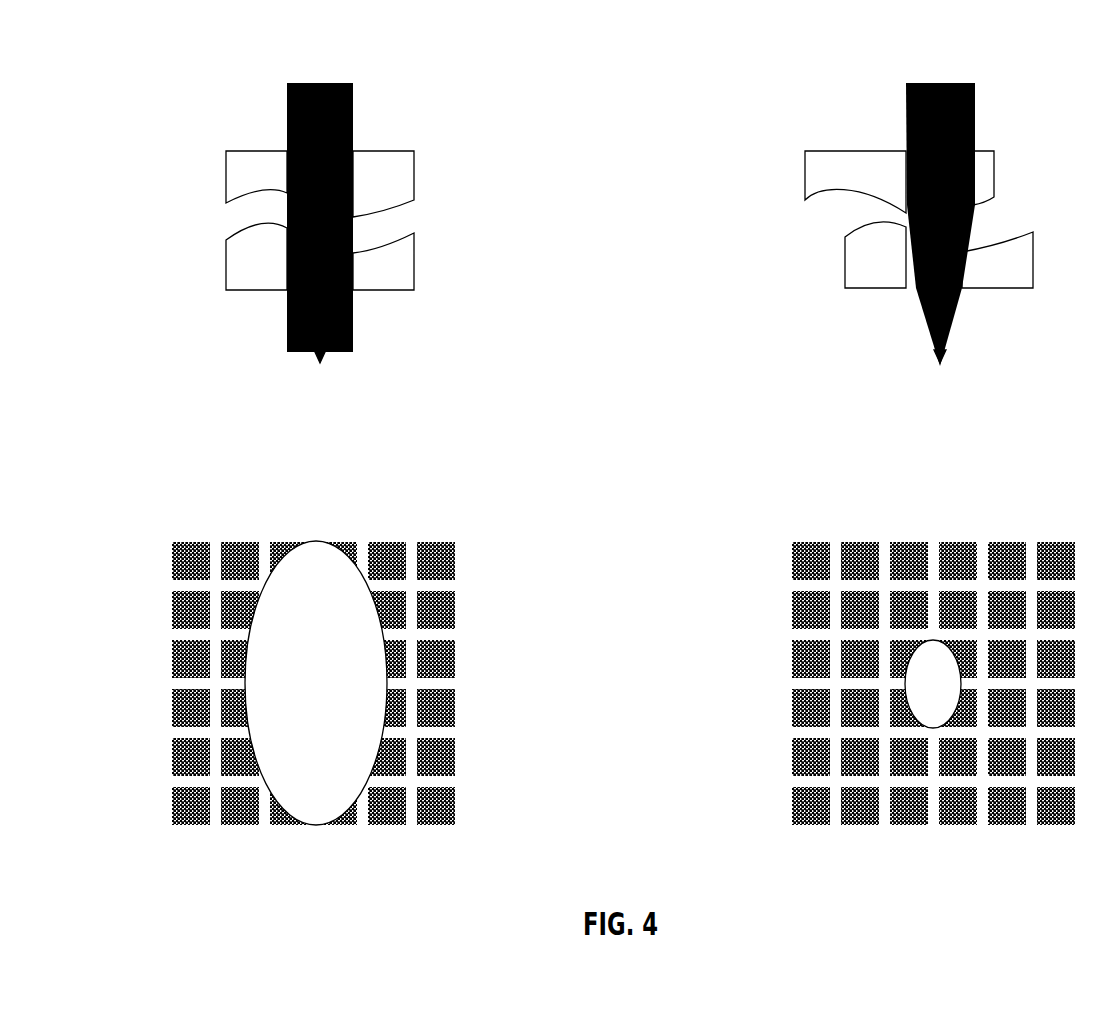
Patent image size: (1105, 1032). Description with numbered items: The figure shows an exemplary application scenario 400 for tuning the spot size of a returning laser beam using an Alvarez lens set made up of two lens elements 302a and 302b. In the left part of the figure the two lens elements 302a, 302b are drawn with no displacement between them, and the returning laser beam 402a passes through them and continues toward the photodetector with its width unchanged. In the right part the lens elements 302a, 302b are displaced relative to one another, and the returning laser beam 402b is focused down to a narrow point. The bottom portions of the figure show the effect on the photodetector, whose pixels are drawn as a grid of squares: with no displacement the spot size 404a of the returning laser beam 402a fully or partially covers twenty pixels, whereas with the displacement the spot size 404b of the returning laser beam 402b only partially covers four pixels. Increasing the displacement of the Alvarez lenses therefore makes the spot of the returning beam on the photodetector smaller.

The application scenario 400 is at (636, 39).
The lens element 302a is at (414, 280).
The lens element 302b is at (414, 157).
The returning laser beam 402a is at (322, 340).
The returning laser beam 402b is at (947, 327).
The spot size 404a is at (318, 562).
The spot size 404b is at (938, 660).